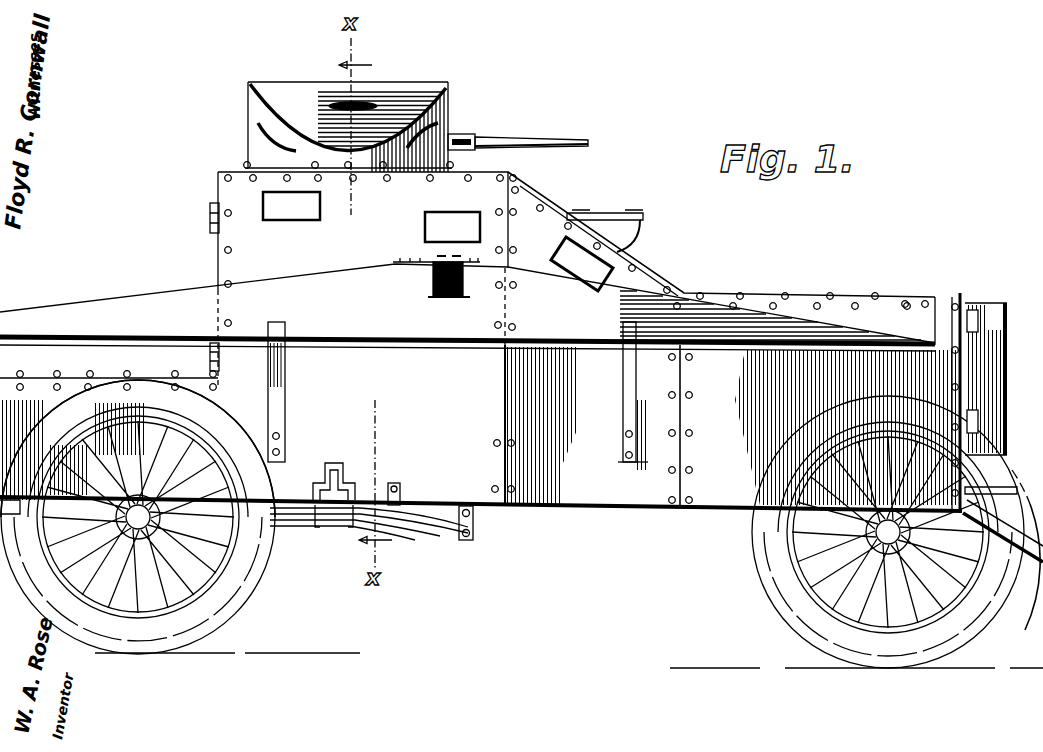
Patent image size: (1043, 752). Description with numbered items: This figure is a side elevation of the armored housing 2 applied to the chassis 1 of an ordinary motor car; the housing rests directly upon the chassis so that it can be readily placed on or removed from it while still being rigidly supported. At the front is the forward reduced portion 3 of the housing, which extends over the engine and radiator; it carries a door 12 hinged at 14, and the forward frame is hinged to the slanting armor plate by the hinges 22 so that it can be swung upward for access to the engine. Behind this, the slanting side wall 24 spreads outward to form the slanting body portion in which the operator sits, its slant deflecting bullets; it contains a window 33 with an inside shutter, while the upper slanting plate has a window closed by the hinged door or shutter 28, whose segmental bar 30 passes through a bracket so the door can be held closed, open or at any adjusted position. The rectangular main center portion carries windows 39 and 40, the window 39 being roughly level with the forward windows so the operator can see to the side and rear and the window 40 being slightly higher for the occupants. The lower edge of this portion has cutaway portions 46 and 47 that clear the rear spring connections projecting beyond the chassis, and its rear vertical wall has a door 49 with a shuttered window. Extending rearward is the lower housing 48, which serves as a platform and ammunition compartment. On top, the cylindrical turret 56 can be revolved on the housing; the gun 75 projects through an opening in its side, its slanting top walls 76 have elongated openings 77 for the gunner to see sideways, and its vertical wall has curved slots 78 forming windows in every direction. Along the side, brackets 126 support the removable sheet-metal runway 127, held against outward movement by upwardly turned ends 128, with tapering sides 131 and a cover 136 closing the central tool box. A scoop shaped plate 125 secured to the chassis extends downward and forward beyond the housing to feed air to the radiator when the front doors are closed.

The chassis 1 is at (1017, 489).
The armored housing 2 is at (592, 425).
The forward reduced portion 3 is at (838, 414).
The door 12 is at (988, 308).
The hinge 14 is at (965, 300).
The hinges 22 is at (684, 293).
The slanting side wall 24 is at (542, 423).
The hinged door or shutter 28 is at (627, 207).
The segmental bar 30 is at (638, 237).
The window 33 is at (585, 268).
The window 39 is at (425, 234).
The window 40 is at (308, 212).
The cutaway portion 46 is at (335, 464).
The cutaway portion 47 is at (400, 486).
The rearwardly extending housing 48 is at (138, 517).
The door 49 is at (216, 256).
The turret 56 is at (272, 150).
The gun 75 is at (495, 142).
The slanting walls 76 is at (306, 74).
The elongated openings 77 is at (370, 104).
The curved slots 78 is at (256, 128).
The scoop shaped plate 125 is at (976, 641).
The brackets 126 is at (286, 388).
The runway 127 is at (448, 295).
The upwardly turned ends 128 is at (290, 327).
The side 131 is at (467, 303).
The cover 136 is at (413, 263).